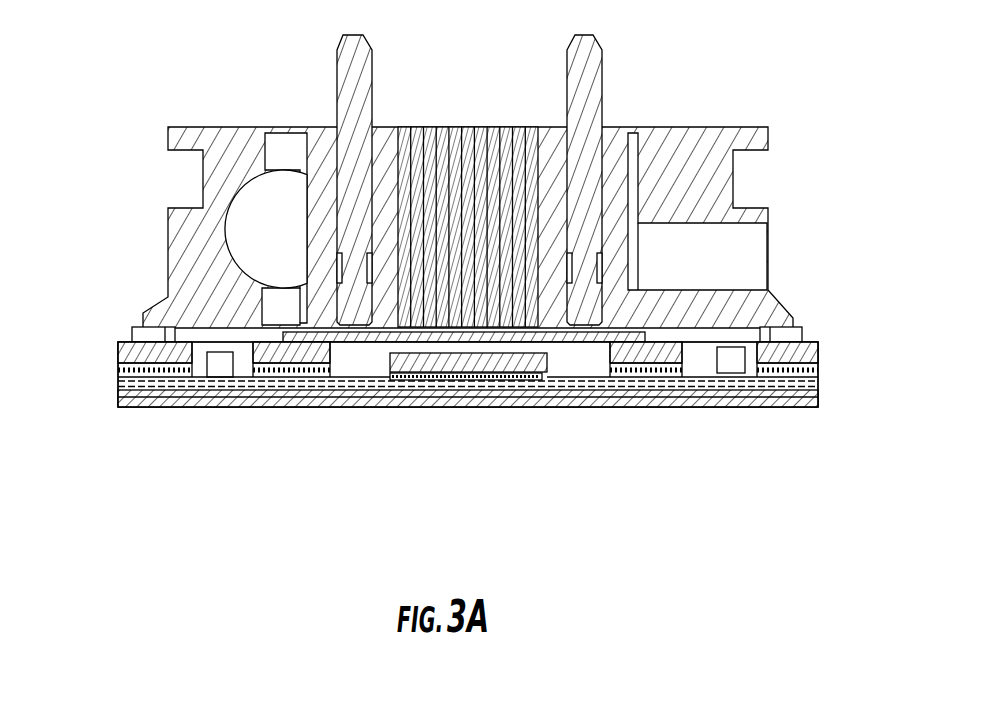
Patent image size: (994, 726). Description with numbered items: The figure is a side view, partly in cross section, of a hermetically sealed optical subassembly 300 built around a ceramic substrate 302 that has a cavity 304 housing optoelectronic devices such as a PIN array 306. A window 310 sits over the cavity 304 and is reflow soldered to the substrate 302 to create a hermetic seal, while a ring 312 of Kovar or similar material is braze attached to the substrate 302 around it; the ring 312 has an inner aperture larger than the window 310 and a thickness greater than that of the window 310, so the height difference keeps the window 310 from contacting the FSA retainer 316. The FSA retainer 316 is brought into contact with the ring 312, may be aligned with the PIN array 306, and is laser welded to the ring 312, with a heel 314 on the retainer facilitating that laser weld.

The hermetically sealed optical subassembly 300 is at (477, 265).
The ceramic substrate 302 is at (507, 419).
The cavity 304 is at (350, 352).
The PIN array 306 is at (540, 363).
The window 310 is at (643, 335).
The ring 312 is at (790, 332).
The heel 314 is at (167, 297).
The FSA retainer 316 is at (690, 177).